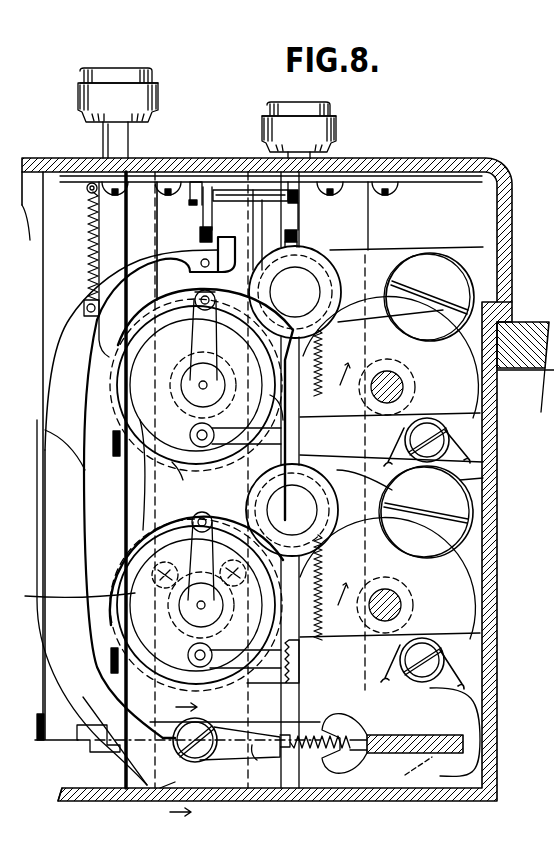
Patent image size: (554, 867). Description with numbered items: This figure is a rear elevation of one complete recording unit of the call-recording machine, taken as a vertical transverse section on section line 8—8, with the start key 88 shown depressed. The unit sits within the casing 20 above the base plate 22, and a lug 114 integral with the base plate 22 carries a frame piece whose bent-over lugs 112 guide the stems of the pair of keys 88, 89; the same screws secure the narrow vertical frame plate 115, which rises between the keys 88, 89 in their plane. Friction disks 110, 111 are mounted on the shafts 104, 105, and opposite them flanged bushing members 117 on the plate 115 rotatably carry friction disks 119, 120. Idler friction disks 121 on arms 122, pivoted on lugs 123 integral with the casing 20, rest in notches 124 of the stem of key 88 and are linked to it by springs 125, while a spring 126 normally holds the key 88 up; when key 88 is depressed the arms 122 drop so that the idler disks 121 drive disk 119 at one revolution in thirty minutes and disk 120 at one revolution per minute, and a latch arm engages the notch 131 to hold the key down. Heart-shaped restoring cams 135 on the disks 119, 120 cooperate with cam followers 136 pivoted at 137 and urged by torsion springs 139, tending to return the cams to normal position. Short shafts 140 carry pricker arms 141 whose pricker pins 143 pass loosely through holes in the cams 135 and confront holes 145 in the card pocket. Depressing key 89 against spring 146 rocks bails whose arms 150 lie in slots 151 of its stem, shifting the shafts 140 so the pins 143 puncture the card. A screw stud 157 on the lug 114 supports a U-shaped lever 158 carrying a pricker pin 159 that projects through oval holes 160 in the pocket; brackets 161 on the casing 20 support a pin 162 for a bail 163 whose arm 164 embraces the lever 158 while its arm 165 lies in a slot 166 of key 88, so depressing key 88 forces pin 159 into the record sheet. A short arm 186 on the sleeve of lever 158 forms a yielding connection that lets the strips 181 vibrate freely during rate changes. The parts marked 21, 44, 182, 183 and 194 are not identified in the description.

The section line 8 is at (37, 478).
The casing 20 is at (497, 508).
The mounting block 21 is at (526, 322).
The base plate 22 is at (107, 789).
The side wall 44 is at (36, 725).
The key 88 is at (262, 128).
The key 89 is at (148, 98).
The shaft 104 is at (388, 378).
The shaft 105 is at (402, 605).
The friction disk 110 is at (482, 388).
The friction disk 111 is at (455, 593).
The bent-over lug 112 is at (77, 757).
The lug 114 is at (173, 784).
The frame plate 115 is at (370, 223).
The member 117 is at (235, 760).
The friction disk 119 is at (173, 465).
The friction disk 120 is at (67, 590).
The idler friction disk 121 is at (368, 278).
The arm 122 is at (383, 504).
The lug 123 is at (468, 480).
The notch 124 is at (272, 352).
The spring 125 is at (322, 350).
The spring 126 is at (310, 638).
The notch 131 is at (273, 407).
The restoring cam 135 is at (137, 372).
The cam follower 136 is at (233, 440).
The pivot 137 is at (449, 440).
The torsion spring 139 is at (455, 425).
The short shaft 140 is at (205, 384).
The pricker arm 141 is at (197, 320).
The pricker pin 143 is at (214, 297).
The hole 145 is at (144, 456).
The spring 146 is at (92, 237).
The arm 150 is at (113, 452).
The slot 151 is at (45, 432).
The screw stud 157 is at (165, 726).
The lever 158 is at (65, 783).
The pricker pin 159 is at (214, 231).
The oval hole 160 is at (43, 262).
The bracket 161 is at (167, 170).
The pin 162 is at (241, 201).
The bail 163 is at (257, 170).
The arm 164 is at (33, 176).
The arm 165 is at (303, 214).
The slot 166 is at (300, 245).
The strip 181 is at (415, 735).
The pocket 182 is at (416, 776).
The guide 183 is at (455, 726).
The short arm 186 is at (250, 790).
The spring seat 194 is at (82, 318).